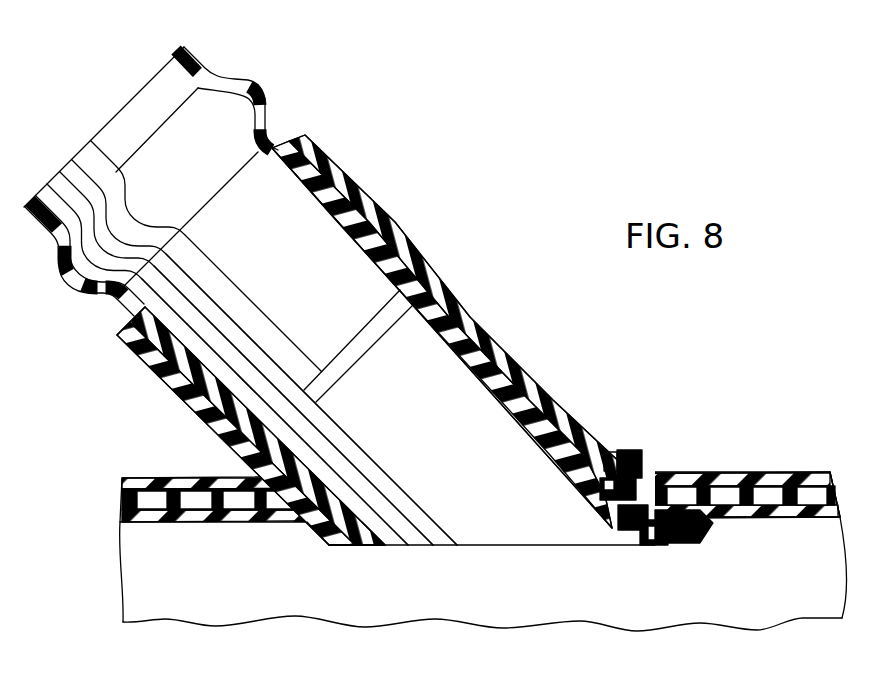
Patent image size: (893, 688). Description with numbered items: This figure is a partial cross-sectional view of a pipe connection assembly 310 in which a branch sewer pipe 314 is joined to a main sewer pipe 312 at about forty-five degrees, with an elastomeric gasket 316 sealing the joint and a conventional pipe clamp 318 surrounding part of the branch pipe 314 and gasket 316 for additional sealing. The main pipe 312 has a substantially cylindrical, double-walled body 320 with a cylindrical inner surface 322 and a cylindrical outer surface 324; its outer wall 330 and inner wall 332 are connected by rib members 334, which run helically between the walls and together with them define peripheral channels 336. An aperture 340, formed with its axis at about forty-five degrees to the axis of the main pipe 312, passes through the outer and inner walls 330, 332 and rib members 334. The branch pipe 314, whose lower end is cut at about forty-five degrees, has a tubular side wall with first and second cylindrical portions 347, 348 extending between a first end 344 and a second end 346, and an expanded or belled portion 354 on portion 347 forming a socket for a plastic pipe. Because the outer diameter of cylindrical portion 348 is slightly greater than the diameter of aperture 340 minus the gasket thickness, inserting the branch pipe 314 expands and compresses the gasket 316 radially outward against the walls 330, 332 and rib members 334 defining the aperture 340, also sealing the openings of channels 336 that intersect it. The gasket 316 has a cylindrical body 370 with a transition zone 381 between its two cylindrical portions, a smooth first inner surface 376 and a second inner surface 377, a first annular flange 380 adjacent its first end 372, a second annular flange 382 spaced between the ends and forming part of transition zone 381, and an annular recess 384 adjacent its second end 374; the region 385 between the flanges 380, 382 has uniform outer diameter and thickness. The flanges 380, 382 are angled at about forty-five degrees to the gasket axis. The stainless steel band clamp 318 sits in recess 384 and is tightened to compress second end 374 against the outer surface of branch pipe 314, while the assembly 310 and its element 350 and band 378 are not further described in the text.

The circuit board 310 is at (118, 418).
The main sewer pipe 312 is at (122, 500).
The branch sewer pipe 314 is at (97, 134).
The elastomeric gasket 316 is at (196, 417).
The pipe clamp 318 is at (152, 372).
The double-walled body 320 is at (718, 466).
The inner surface 322 is at (830, 521).
The outer surface 324 is at (681, 471).
The outer wall 330 is at (210, 479).
The inner wall 332 is at (228, 523).
The rib members 334 is at (790, 503).
The peripheral channels 336 is at (200, 497).
The aperture 340 is at (628, 520).
The first end 344 is at (412, 551).
The second end 346 is at (203, 47).
The first cylindrical portion 347 is at (190, 338).
The second cylindrical portion 348 is at (272, 134).
The connector foot 350 is at (650, 546).
The expanded or belled portion 354 is at (267, 88).
The cylindrical body 370 is at (543, 382).
The first end 372 is at (336, 547).
The second end 374 is at (117, 344).
The first inner surface 376 is at (208, 381).
The second inner surface 377 is at (322, 477).
The lower band of edge strip 378 is at (220, 437).
The first annular flange 380 is at (698, 543).
The transition zone 381 is at (447, 283).
The second annular flange 382 is at (616, 452).
The annular recess 384 is at (355, 185).
The region between flanges 385 is at (602, 484).